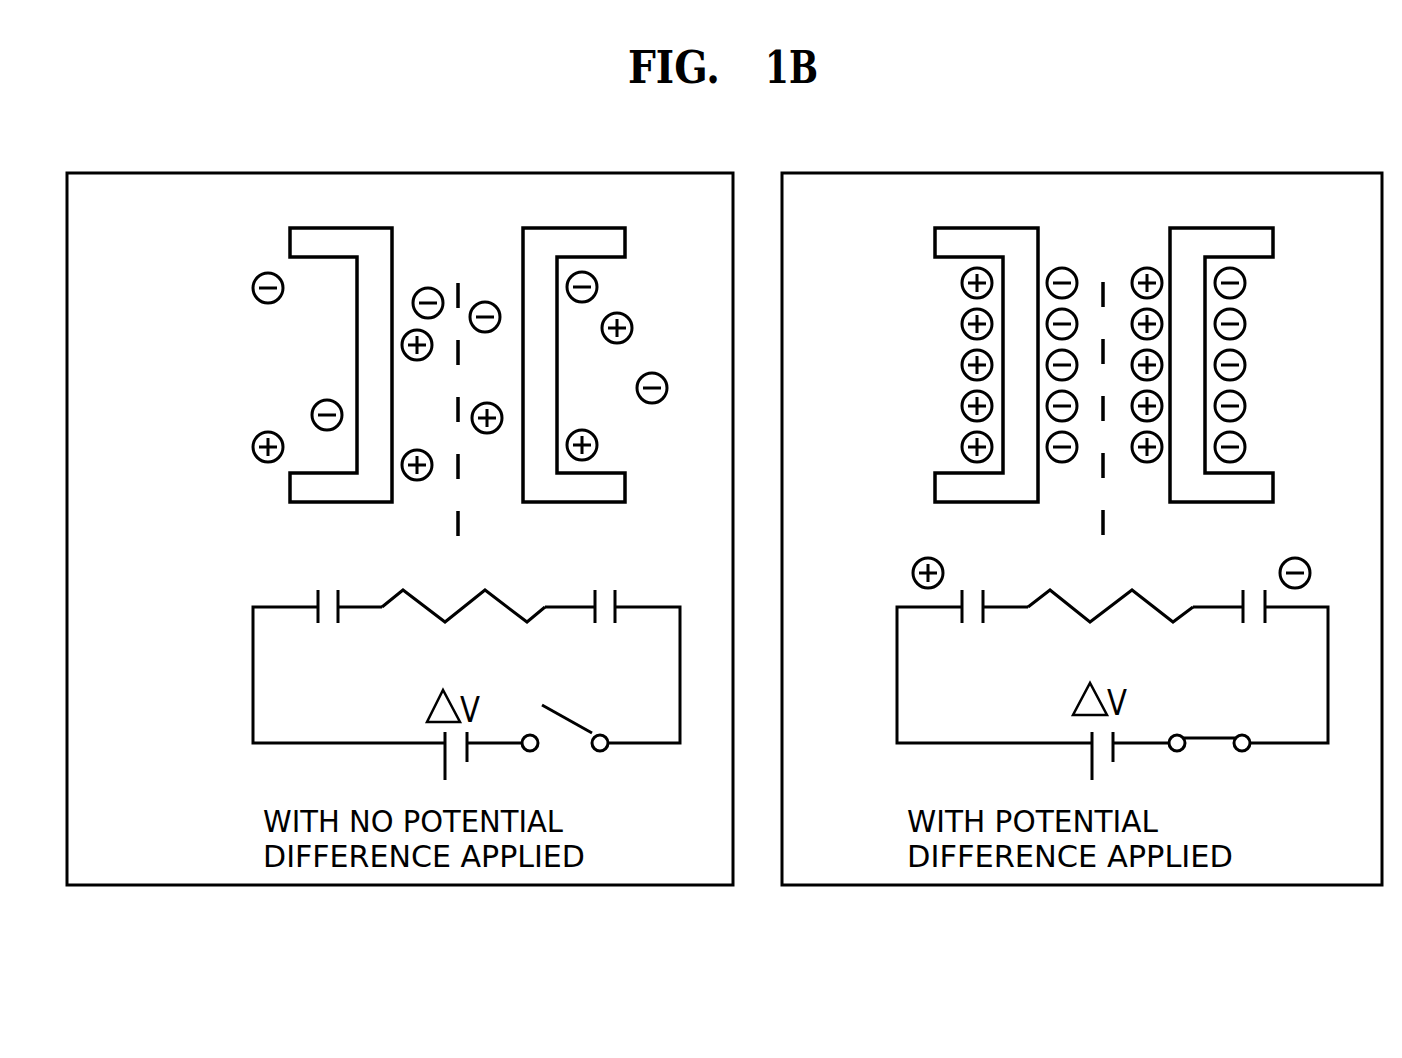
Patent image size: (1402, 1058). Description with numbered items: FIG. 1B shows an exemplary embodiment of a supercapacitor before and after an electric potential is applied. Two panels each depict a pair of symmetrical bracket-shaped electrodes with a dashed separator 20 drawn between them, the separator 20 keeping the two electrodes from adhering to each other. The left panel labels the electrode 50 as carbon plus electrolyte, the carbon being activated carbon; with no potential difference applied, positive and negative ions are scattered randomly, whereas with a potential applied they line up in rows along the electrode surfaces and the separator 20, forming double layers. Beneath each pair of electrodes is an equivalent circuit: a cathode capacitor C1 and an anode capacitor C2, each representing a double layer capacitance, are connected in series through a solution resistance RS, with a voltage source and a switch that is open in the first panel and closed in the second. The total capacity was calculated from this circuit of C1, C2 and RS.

The separator 20 is at (777, 360).
The electrode 50 is at (376, 376).
The cathode capacitor C1 is at (659, 659).
The anode capacitor C2 is at (942, 659).
The solution resistance RS is at (787, 633).